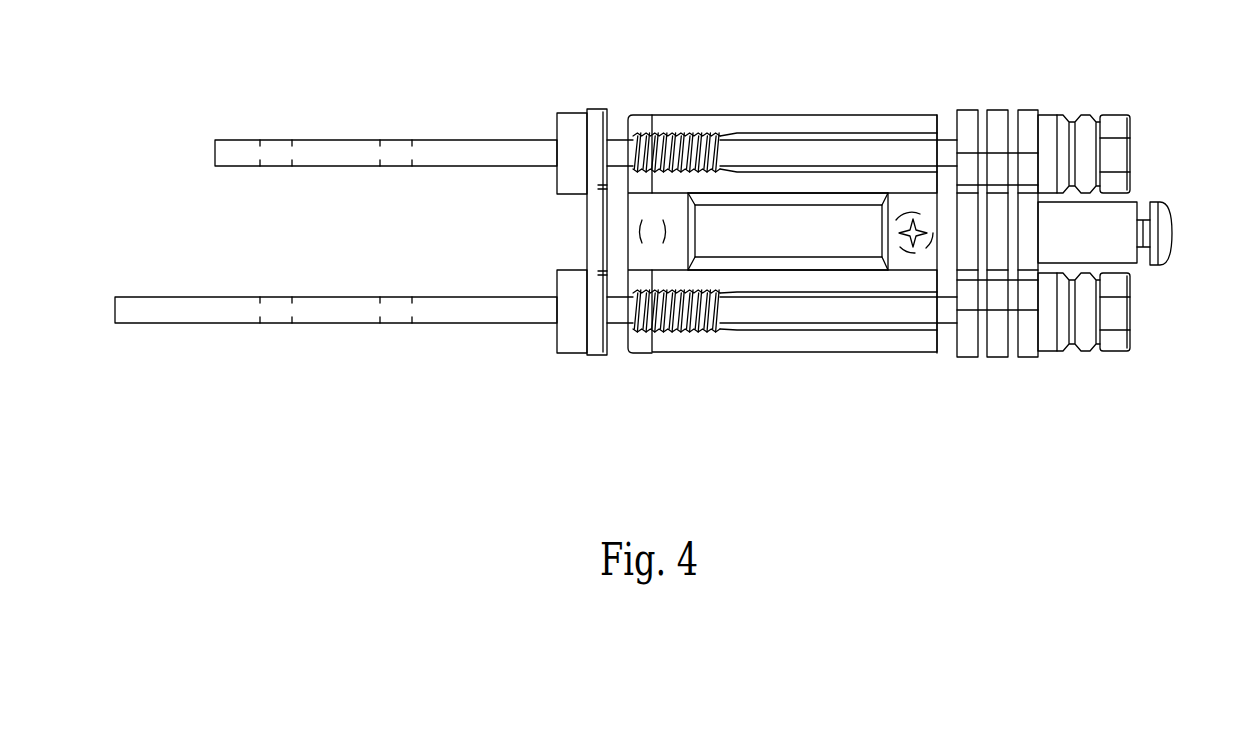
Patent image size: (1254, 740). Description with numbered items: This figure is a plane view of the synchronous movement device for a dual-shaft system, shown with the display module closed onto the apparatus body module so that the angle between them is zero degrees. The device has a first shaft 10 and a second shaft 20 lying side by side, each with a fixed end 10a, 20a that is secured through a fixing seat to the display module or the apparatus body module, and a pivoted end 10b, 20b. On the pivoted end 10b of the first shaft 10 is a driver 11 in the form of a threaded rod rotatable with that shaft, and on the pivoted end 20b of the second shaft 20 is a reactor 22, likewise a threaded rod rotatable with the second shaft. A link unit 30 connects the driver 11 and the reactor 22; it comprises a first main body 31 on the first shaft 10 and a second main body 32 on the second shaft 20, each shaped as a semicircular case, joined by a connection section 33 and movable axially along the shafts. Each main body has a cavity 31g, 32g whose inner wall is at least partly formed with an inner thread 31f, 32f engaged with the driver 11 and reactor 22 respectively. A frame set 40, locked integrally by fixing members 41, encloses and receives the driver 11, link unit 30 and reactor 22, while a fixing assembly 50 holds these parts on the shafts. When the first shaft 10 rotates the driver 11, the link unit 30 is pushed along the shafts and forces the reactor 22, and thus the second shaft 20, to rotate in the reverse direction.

The first shaft 10 is at (586, 103).
The fixed end of first shaft 10a is at (333, 148).
The pivoted end of first shaft 10b is at (874, 148).
The driver 11 is at (636, 138).
The second shaft 20 is at (536, 354).
The fixed end of second shaft 20a is at (338, 323).
The pivoted end of second shaft 20b is at (887, 318).
The reactor 22 is at (642, 333).
The link unit 30 is at (799, 226).
The first main body 31 is at (785, 109).
The inner thread of first main body 31f is at (727, 133).
The cavity of first main body 31g is at (806, 135).
The second main body 32 is at (785, 356).
The inner thread of second main body 32f is at (728, 333).
The cavity of second main body 32g is at (827, 333).
The connection section 33 is at (770, 240).
The frame set 40 is at (618, 232).
The fixing member 41 is at (945, 178).
The fixing assembly 50 is at (998, 108).